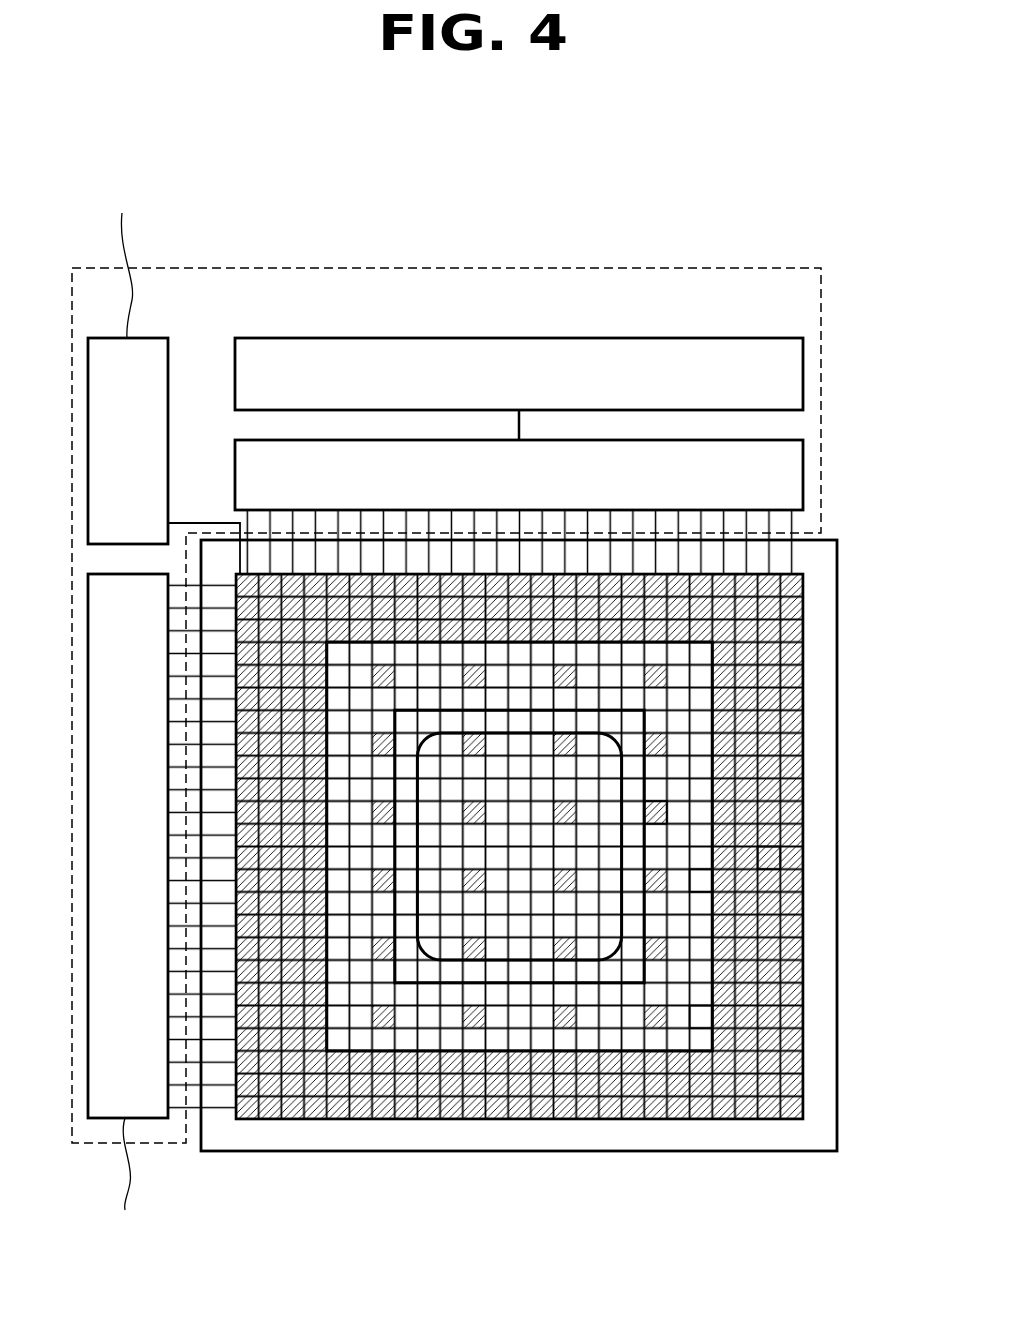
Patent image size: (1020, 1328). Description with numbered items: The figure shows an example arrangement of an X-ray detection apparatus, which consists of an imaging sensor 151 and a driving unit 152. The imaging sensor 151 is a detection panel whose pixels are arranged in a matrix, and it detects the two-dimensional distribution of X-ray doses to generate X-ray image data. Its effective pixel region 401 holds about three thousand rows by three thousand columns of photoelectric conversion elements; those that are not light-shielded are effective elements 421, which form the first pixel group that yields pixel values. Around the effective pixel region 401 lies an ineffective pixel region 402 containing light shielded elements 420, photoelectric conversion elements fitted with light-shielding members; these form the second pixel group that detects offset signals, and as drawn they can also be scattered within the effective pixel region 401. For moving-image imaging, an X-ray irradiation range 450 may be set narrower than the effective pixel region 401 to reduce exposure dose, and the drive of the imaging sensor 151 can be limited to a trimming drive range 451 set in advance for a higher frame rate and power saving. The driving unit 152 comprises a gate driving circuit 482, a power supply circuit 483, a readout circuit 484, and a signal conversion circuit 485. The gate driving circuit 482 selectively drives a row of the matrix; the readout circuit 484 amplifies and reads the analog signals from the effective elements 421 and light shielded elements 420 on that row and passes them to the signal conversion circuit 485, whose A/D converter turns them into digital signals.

The imaging sensor 151 is at (712, 1152).
The driving unit 152 is at (821, 292).
The effective pixel region 401 is at (713, 674).
The ineffective pixel region 402 is at (773, 743).
The light shielded elements 420 is at (657, 808).
The effective elements 421 is at (700, 879).
The X-ray irradiation range 450 is at (622, 927).
The trimming drive range 451 is at (713, 1017).
The gate driving circuit 482 is at (166, 911).
The power supply circuit 483 is at (175, 379).
The readout circuit 484 is at (803, 470).
The signal conversion circuit 485 is at (803, 368).